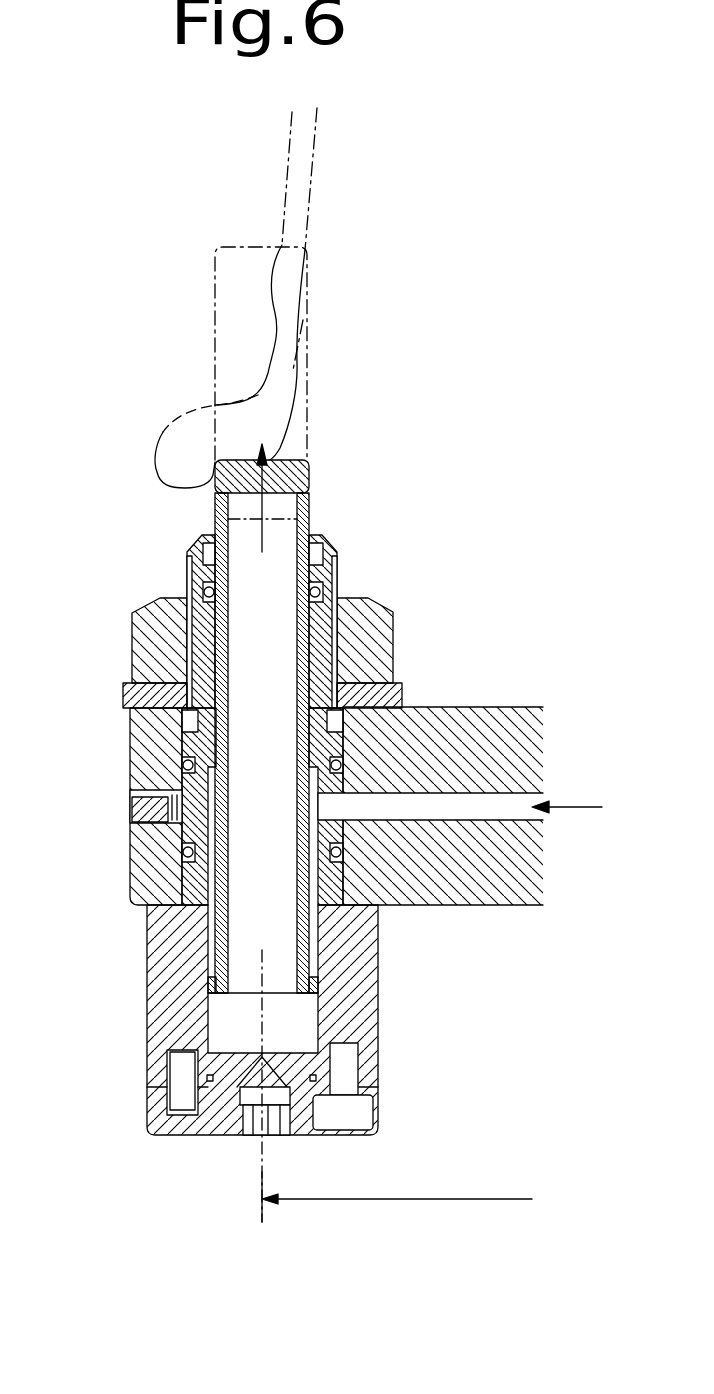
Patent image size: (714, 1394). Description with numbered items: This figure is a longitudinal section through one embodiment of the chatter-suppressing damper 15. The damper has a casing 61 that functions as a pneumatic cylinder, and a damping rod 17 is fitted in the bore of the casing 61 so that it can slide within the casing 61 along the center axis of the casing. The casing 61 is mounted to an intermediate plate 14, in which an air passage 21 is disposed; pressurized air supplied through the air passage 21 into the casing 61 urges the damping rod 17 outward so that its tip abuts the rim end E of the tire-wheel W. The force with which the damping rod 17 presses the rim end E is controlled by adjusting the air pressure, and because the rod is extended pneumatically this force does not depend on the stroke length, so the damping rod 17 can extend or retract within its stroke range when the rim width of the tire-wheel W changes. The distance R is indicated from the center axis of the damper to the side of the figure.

The intermediate plate 14 is at (489, 707).
The chatter-suppressing damper 15 is at (180, 1147).
The damping rod 17 is at (300, 477).
The air passage 21 is at (501, 810).
The casing 61 is at (160, 962).
The tire-wheel W is at (312, 198).
The rim end E is at (213, 493).
The radius R is at (397, 1098).